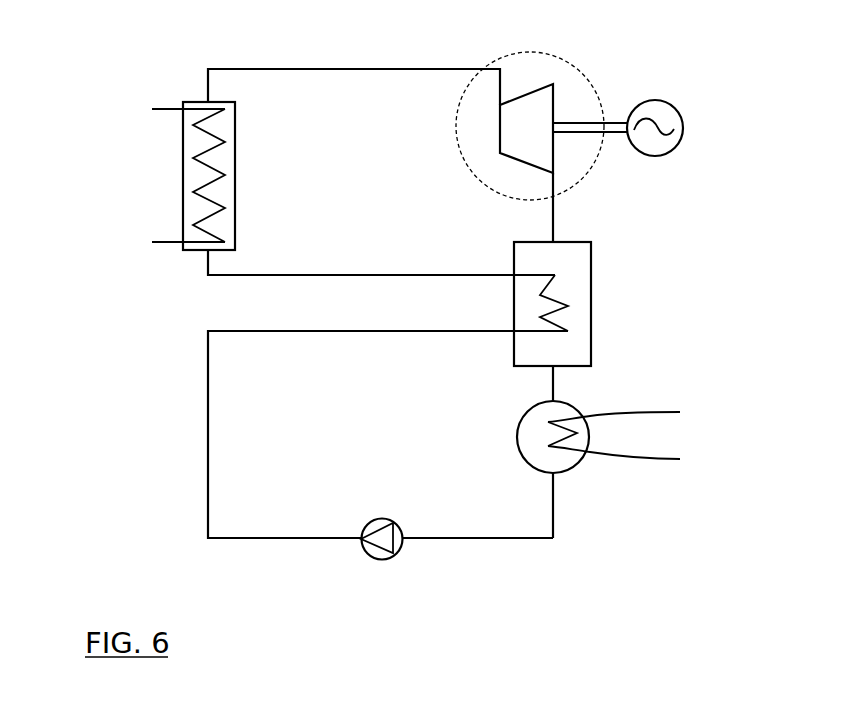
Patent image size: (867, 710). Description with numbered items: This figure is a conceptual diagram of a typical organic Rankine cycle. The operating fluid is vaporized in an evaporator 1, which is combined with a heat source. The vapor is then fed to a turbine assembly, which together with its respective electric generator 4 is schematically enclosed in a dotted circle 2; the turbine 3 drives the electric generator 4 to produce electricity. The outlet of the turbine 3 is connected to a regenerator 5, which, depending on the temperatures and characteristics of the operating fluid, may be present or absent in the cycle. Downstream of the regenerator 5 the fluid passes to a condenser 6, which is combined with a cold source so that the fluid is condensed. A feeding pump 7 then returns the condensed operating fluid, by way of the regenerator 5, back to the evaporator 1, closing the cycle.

The evaporator 1 is at (183, 100).
The dotted circle 2 is at (582, 75).
The turbine 3 is at (526, 128).
The electric generator 4 is at (665, 113).
The regenerator 5 is at (577, 258).
The condenser 6 is at (566, 462).
The feeding pump 7 is at (362, 554).